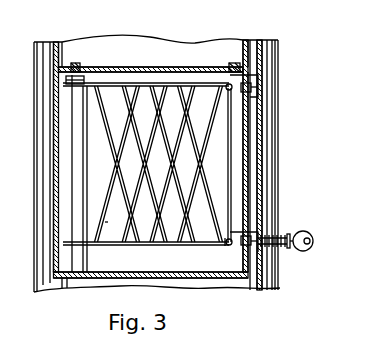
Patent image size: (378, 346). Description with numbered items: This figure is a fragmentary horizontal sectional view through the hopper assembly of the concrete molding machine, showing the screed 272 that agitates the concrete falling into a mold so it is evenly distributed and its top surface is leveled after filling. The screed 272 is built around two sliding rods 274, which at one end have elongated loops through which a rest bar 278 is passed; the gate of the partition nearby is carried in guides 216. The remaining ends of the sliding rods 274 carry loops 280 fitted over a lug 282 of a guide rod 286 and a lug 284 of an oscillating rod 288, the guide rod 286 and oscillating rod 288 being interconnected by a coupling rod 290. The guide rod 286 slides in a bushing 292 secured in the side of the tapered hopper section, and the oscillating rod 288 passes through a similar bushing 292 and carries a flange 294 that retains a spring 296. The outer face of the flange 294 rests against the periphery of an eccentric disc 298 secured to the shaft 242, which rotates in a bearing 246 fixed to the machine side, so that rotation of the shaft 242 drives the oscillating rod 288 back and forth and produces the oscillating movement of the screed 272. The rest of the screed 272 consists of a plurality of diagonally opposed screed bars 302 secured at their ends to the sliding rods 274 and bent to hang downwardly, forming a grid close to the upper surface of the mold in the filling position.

The guides 216 is at (76, 63).
The shaft 242 is at (312, 241).
The bearing 246 is at (140, 163).
The screed 272 is at (179, 110).
The sliding rods 274 is at (131, 83).
The rest bar 278 is at (82, 195).
The loops 280 is at (229, 246).
The lug 282 is at (228, 85).
The lug 284 is at (231, 245).
The guide rod 286 is at (234, 93).
The oscillating rod 288 is at (247, 235).
The coupling rod 290 is at (233, 161).
The bushing 292 is at (250, 84).
The flange 294 is at (287, 247).
The spring 296 is at (283, 250).
The eccentric disc 298 is at (308, 238).
The screed bars 302 is at (107, 220).